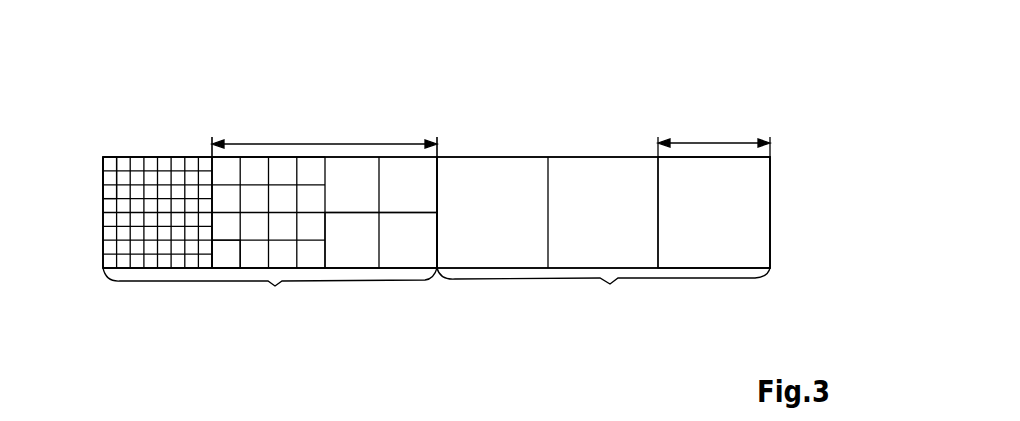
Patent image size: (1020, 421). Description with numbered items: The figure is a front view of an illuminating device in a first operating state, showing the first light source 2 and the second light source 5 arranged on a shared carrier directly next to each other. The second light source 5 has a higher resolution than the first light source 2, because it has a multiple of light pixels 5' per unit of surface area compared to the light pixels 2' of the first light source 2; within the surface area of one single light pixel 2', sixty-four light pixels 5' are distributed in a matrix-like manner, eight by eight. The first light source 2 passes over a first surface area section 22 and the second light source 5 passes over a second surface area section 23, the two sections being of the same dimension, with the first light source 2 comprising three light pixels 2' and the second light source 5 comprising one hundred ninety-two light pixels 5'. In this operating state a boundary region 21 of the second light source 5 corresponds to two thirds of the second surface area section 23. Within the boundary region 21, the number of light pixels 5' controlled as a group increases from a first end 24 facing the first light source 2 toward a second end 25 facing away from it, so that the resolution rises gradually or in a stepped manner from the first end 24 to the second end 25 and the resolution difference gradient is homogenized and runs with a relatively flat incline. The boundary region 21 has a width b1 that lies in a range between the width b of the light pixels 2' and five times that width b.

The first light source 2 is at (436, 173).
The light pixels of the first light source 2' is at (754, 212).
The second light source 5 is at (157, 169).
The light pixels of the second light source 5' is at (242, 239).
The boundary region 21 is at (293, 85).
The first surface area section 22 is at (603, 235).
The second surface area section 23 is at (270, 236).
The first end of the boundary region 24 is at (438, 187).
The second end of the boundary region 25 is at (212, 186).
The width of the first light pixels b is at (714, 127).
The width of the boundary region b1 is at (324, 128).